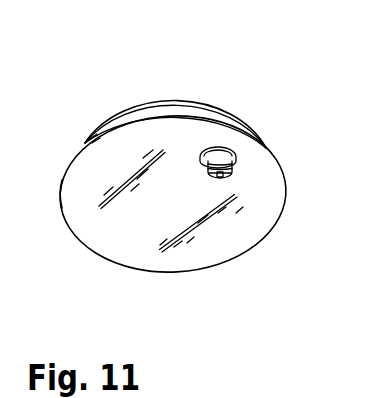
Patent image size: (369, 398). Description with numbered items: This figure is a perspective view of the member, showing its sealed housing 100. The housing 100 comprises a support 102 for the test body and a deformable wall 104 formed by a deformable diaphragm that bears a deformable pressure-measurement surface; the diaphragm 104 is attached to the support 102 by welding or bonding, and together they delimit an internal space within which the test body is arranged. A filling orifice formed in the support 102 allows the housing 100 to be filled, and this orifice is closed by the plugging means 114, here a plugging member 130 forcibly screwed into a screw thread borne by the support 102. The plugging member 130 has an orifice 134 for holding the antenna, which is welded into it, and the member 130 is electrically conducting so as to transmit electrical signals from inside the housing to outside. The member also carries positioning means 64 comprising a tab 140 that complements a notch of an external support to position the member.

The sealed housing 100 is at (290, 116).
The support 102 is at (237, 242).
The deformable wall 104 is at (173, 97).
The plugging means 114 is at (251, 182).
The plugging member 130 is at (238, 165).
The orifice 134 is at (217, 178).
The tab 140 is at (105, 128).
The positioning means 64 is at (52, 201).